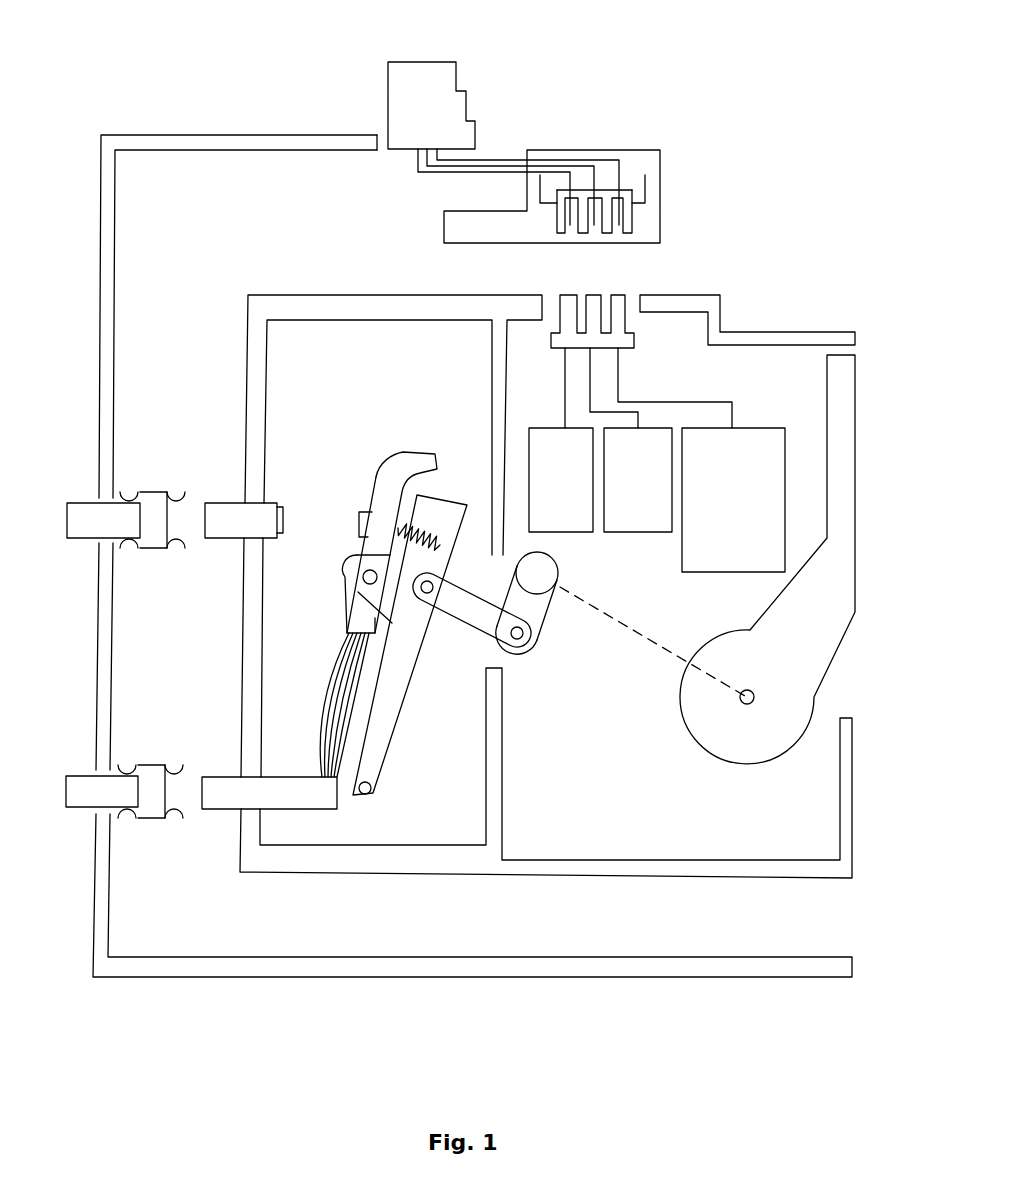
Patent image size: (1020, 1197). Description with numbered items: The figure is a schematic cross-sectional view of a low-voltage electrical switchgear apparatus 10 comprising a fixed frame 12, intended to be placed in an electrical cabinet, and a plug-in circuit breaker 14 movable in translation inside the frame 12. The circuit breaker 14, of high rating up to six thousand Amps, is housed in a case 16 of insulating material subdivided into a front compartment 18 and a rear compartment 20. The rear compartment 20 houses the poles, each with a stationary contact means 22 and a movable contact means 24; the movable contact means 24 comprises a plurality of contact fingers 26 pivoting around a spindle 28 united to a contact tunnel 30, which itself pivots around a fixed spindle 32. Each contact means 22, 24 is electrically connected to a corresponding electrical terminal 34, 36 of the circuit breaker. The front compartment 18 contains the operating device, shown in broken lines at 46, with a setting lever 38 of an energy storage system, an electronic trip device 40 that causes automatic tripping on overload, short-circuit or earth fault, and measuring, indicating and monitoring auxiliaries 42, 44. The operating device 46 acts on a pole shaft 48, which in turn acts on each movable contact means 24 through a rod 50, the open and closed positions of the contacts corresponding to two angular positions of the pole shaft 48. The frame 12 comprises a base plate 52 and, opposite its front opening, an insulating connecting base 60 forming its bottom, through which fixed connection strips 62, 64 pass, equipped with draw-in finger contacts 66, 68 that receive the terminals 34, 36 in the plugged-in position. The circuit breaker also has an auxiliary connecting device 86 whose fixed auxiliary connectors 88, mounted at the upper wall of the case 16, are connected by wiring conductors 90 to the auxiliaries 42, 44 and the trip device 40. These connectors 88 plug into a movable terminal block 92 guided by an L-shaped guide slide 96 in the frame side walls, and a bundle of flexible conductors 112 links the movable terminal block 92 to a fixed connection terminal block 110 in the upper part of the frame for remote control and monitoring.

The low-voltage electrical switchgear apparatus 10 is at (678, 70).
The fixed frame 12 is at (128, 250).
The plug-in circuit breaker 14 is at (767, 297).
The case 16 is at (330, 305).
The front compartment 18 is at (530, 840).
The rear compartment 20 is at (352, 825).
The stationary contact means 22 is at (284, 520).
The movable contact means 24 is at (420, 698).
The contact fingers 26 is at (383, 497).
The spindle 28 is at (365, 578).
The contact tunnel 30 is at (388, 725).
The fixed spindle 32 is at (368, 795).
The electrical terminal 34 is at (232, 515).
The electrical terminal 36 is at (228, 790).
The setting lever 38 is at (838, 546).
The electronic trip device 40 is at (733, 500).
The auxiliaries 42 is at (638, 480).
The auxiliaries 44 is at (561, 480).
The operating device 46 is at (640, 635).
The pole shaft 48 is at (540, 575).
The rod 50 is at (450, 610).
The base plate 52 is at (268, 968).
The insulating connecting base 60 is at (105, 265).
The fixed connection strip 62 is at (83, 518).
The fixed connection strip 64 is at (80, 790).
The draw-in finger contact 66 is at (156, 491).
The draw-in finger contact 68 is at (154, 764).
The auxiliary connecting device 86 is at (639, 279).
The fixed auxiliary connectors 88 is at (565, 302).
The wiring conductors 90 is at (565, 393).
The movable terminal block 92 is at (634, 175).
The L-shaped guide slide 96 is at (465, 220).
The fixed connection terminal block 110 is at (480, 74).
The bundle of flexible conductors 112 is at (503, 158).